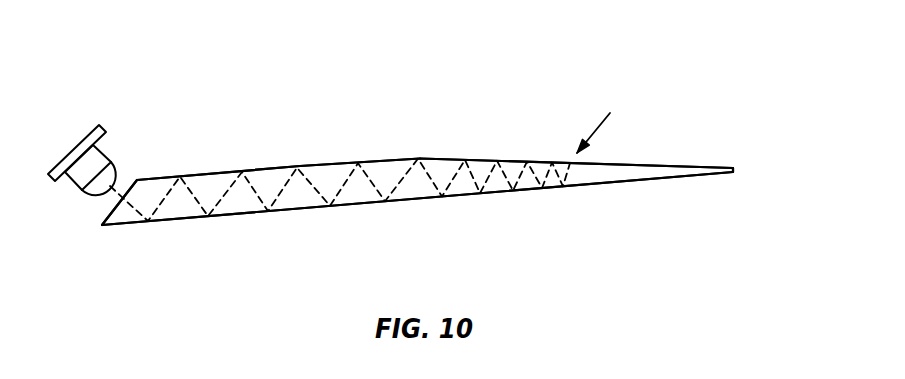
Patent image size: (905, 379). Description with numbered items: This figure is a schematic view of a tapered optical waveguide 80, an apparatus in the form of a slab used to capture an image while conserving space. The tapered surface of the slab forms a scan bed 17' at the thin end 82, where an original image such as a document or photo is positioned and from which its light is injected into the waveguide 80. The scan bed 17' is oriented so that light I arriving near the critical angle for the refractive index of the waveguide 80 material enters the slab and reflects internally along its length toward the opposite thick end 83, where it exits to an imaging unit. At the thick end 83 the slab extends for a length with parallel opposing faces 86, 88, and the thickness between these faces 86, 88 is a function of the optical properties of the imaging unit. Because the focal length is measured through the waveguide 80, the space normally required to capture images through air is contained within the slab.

The tapered optical waveguide 80 is at (675, 140).
The thin end 82 is at (767, 157).
The thick end 83 is at (117, 230).
The opposing face 86 is at (410, 200).
The opposing face 88 is at (271, 170).
The scan bed 17' is at (576, 133).
The incident light I is at (601, 123).